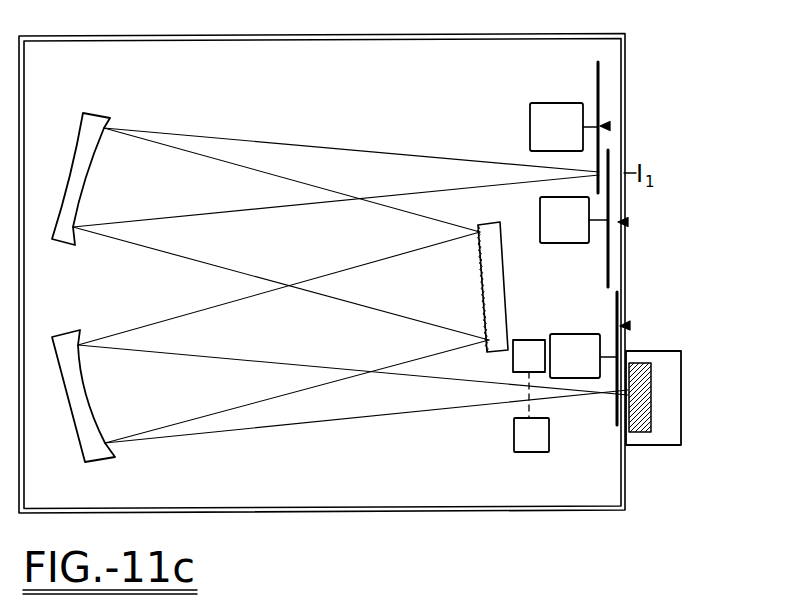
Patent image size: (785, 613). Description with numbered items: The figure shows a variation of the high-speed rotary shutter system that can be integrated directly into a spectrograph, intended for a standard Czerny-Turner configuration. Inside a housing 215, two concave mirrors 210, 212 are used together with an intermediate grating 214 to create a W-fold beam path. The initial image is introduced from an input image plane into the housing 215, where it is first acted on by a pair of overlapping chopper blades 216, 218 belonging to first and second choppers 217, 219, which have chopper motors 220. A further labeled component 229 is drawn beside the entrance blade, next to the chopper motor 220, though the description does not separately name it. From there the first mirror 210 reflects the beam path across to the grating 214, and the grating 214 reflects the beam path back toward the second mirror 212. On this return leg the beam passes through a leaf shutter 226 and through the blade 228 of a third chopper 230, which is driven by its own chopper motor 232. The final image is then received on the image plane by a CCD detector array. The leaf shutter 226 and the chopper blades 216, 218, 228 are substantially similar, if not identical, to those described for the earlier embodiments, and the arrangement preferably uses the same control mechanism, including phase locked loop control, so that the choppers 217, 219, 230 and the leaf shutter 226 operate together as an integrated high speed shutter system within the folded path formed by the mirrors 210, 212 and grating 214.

The first concave mirror 210 is at (88, 112).
The second concave mirror 212 is at (92, 463).
The intermediate grating 214 is at (503, 287).
The housing 215 is at (326, 34).
The chopper blade 216 is at (598, 64).
The first chopper 217 is at (607, 126).
The chopper blade 218 is at (609, 269).
The second chopper 219 is at (626, 222).
The chopper motor 220 is at (540, 216).
The leaf shutter 226 is at (529, 453).
The chopper blade 228 is at (617, 294).
The reference channel RC2 229 is at (529, 103).
The third chopper 230 is at (628, 325).
The chopper motor 232 is at (571, 333).